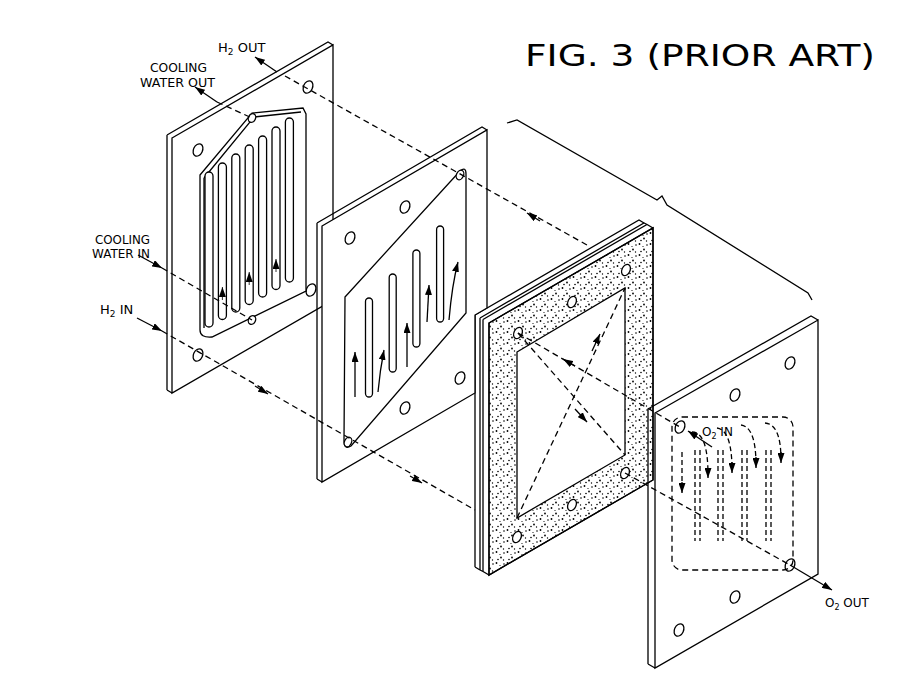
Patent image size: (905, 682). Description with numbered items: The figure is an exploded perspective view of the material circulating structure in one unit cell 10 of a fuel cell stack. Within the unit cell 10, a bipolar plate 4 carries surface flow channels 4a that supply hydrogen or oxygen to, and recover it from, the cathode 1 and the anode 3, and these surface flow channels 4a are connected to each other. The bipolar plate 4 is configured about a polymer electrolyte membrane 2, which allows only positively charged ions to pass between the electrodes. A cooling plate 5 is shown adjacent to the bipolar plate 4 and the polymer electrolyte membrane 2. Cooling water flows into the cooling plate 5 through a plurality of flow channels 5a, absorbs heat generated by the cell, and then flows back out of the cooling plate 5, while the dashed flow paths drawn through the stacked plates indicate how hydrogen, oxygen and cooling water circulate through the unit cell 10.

The cathode 1 is at (582, 465).
The polymer electrolyte membrane 2 is at (477, 571).
The anode 3 is at (474, 487).
The bipolar plate 4 is at (321, 482).
The surface flow channels 4a is at (363, 410).
The cooling plate 5 is at (168, 397).
The flow channels 5a is at (202, 203).
The unit cell 10 is at (659, 210).